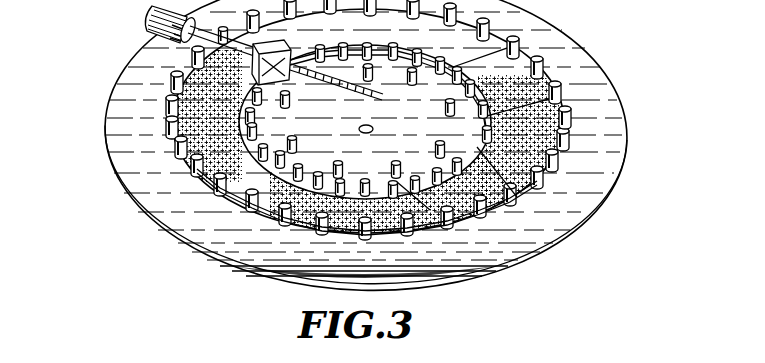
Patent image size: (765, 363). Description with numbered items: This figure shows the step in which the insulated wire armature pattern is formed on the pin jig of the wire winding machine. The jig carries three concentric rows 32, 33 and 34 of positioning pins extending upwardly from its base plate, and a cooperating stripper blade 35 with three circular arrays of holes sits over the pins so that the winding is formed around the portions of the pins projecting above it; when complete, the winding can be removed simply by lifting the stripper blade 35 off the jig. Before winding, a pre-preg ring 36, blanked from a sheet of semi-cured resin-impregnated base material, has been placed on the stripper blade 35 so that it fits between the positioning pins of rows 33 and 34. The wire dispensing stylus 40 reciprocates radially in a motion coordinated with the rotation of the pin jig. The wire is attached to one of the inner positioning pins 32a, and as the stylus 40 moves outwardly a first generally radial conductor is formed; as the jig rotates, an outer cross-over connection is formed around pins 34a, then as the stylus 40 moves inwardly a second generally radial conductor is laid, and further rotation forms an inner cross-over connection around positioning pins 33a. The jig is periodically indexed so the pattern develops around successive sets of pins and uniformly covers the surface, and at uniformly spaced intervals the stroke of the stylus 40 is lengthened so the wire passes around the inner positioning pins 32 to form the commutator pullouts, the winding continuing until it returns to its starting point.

The inner row of positioning pins 32 is at (330, 170).
The inner positioning pin 32a is at (400, 160).
The middle row of positioning pins 33 is at (247, 128).
The inner cross-over positioning pins 33a is at (484, 124).
The outer row of positioning pins 34 is at (566, 138).
The outer cross-over positioning pins 34a is at (496, 204).
The stripper blade 35 is at (606, 155).
The pre-preg ring 36 is at (510, 88).
The wire dispensing stylus 40 is at (251, 68).